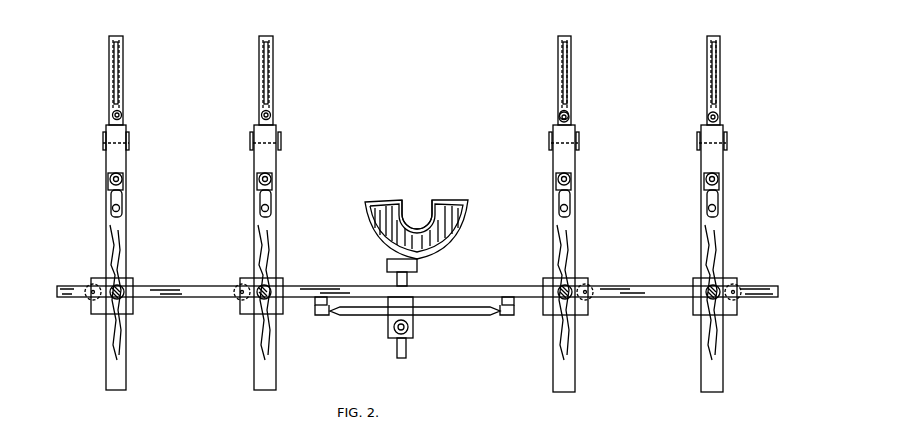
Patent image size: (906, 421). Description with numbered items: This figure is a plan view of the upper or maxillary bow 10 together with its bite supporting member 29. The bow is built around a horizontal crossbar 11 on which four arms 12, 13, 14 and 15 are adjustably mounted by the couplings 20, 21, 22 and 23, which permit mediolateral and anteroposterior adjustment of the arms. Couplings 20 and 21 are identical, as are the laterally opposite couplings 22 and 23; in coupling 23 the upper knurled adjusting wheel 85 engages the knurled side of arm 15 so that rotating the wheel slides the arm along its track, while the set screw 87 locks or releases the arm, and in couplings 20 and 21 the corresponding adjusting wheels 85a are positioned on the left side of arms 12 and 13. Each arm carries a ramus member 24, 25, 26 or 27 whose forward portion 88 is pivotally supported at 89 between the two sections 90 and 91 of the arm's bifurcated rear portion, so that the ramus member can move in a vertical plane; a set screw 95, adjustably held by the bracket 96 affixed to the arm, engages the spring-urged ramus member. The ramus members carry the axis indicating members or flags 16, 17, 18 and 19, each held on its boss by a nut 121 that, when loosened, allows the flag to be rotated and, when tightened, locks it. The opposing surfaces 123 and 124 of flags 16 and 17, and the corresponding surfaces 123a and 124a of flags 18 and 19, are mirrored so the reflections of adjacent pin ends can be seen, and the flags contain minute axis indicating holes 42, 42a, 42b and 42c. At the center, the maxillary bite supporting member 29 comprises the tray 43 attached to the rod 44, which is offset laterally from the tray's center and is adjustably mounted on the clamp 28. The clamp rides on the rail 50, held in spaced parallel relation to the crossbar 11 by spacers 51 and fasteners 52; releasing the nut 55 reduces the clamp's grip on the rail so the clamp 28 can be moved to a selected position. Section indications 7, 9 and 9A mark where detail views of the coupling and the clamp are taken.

The section line 7 is at (785, 415).
The section line 9 is at (477, 352).
The section line 9A is at (312, 361).
The maxillary bow 10 is at (576, 350).
The crossbar 11 is at (650, 300).
The arm 12 is at (126, 240).
The arm 13 is at (276, 240).
The arm 14 is at (575, 240).
The arm 15 is at (723, 240).
The flag 16 is at (122, 43).
The flag 17 is at (273, 43).
The flag 18 is at (571, 45).
The flag 19 is at (720, 45).
The coupling 20 is at (133, 313).
The coupling 21 is at (240, 316).
The coupling 22 is at (585, 316).
The coupling 23 is at (734, 316).
The ramus member 24 is at (123, 155).
The ramus member 25 is at (268, 156).
The ramus member 26 is at (569, 158).
The ramus member 27 is at (717, 158).
The clamp 28 is at (388, 330).
The upper bite supporting member 29 is at (365, 231).
The axis indicating hole 42 is at (118, 78).
The axis indicating hole 42a is at (268, 75).
The axis indicating hole 42b is at (560, 75).
The axis indicating hole 42c is at (712, 75).
The tray 43 is at (445, 205).
The rod 44 is at (406, 345).
The rail 50 is at (350, 317).
The spacer 51 is at (315, 305).
The fastener 52 is at (318, 317).
The nut 55 is at (397, 334).
The upper knurled adjusting wheel 85 is at (590, 300).
The adjusting wheel 85a is at (88, 300).
The set screw 87 is at (112, 286).
The forward portion 88 is at (558, 170).
The pivot 89 is at (702, 150).
The section 90 is at (281, 140).
The section 91 is at (250, 140).
The set screw 95 is at (123, 181).
The bracket 96 is at (118, 197).
The nut 121 is at (569, 112).
The opposing surface 123 is at (119, 64).
The opposing surface 123a is at (569, 64).
The opposing surface 124 is at (263, 72).
The opposing surface 124a is at (708, 96).